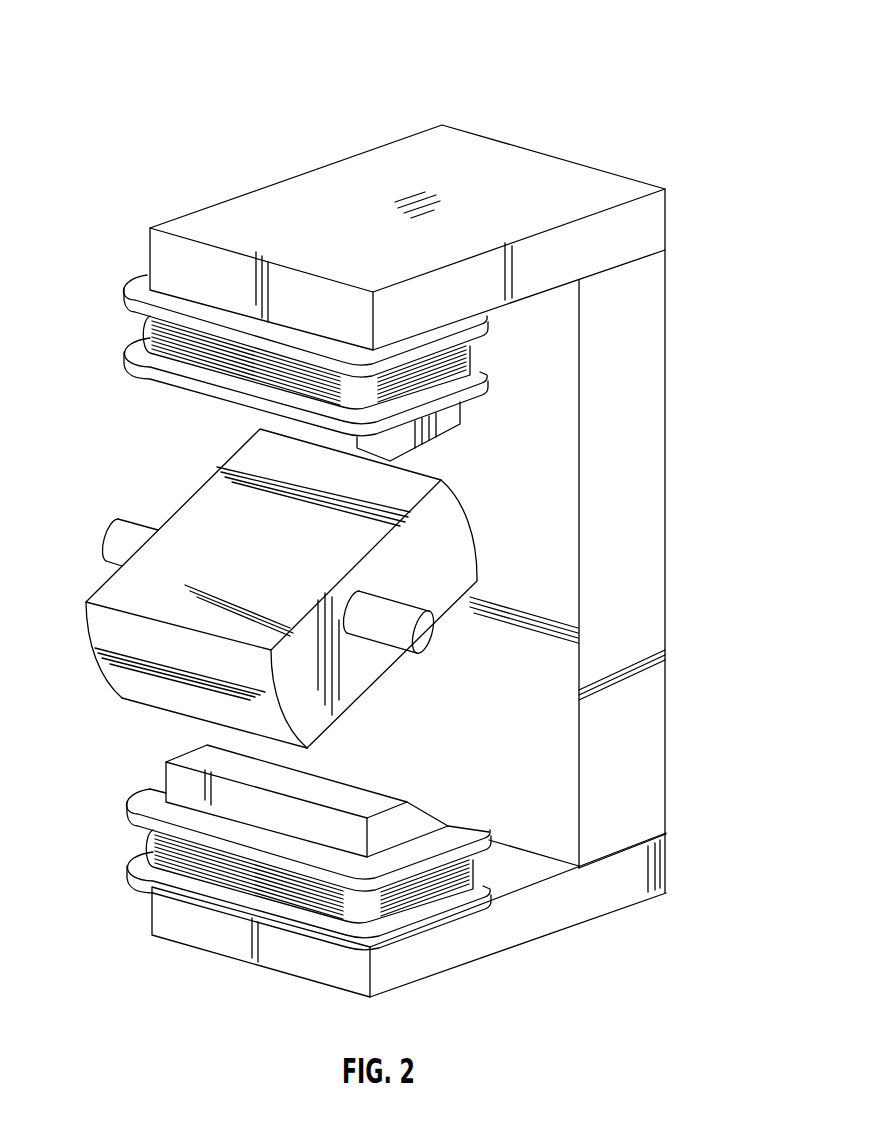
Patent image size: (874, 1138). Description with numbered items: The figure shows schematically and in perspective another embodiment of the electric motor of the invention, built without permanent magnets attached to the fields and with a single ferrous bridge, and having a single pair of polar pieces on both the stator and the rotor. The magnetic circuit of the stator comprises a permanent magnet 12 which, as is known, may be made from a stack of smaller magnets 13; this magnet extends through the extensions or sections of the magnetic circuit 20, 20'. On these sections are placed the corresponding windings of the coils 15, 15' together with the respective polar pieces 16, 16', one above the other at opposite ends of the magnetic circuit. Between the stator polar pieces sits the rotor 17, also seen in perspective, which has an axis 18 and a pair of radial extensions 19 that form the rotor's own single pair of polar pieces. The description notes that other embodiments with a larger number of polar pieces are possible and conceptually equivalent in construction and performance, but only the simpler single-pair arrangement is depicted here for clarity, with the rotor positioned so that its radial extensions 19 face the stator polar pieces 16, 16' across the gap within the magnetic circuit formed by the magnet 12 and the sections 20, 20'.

The permanent magnet 12 is at (157, 77).
The smaller magnets 13 is at (657, 291).
The coil 15 is at (275, 869).
The coil 15' is at (265, 355).
The polar piece 16 is at (265, 796).
The polar piece 16' is at (457, 439).
The rotor 17 is at (460, 556).
The axis 18 is at (104, 538).
The radial extensions 19 is at (116, 691).
The extension or section of the magnetic circuit 20 is at (409, 915).
The extension or section of the magnetic circuit 20' is at (407, 220).